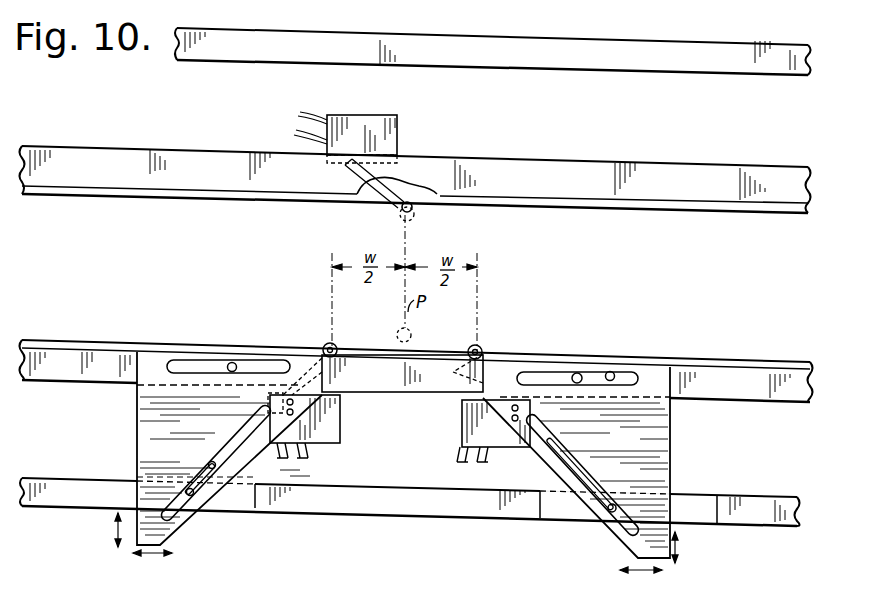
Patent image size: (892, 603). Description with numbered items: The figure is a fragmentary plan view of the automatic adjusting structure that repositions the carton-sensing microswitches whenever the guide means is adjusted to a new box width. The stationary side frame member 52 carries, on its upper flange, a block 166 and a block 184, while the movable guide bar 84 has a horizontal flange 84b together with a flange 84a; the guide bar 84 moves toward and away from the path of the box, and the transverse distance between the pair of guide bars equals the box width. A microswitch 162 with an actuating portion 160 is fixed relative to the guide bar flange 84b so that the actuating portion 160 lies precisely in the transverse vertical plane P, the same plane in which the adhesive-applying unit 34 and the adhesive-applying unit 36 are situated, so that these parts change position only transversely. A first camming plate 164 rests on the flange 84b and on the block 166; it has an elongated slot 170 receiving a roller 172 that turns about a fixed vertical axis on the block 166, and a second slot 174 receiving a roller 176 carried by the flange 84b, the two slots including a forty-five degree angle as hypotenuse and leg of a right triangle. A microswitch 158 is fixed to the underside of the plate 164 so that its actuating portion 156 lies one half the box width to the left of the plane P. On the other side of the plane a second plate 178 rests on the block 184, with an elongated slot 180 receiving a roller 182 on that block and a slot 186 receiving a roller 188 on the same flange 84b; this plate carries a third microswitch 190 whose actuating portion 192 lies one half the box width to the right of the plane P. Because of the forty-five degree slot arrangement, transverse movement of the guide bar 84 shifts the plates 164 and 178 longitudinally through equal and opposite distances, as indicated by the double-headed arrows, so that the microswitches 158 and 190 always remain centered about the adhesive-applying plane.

The side frame member 52 is at (534, 32).
The guide bar 84 is at (598, 160).
The lower flange of slide bar 84a is at (717, 212).
The flange of guide bar 84b is at (662, 172).
The microswitch 162 is at (397, 140).
The actuating portion 160 is at (422, 198).
The adhesive-applying unit 36 is at (397, 216).
The adhesive-applying unit 34 is at (397, 330).
The actuating portion 156 is at (324, 344).
The actuating portion 192 is at (480, 348).
The plate 164 is at (210, 441).
The second slot 174 is at (194, 362).
The roller 176 is at (234, 362).
The microswitch 158 is at (340, 426).
The third microswitch 190 is at (463, 434).
The second plate 178 is at (625, 448).
The elongated slot 186 is at (612, 372).
The roller 188 is at (580, 374).
The roller 172 is at (210, 507).
The elongated slot 170 is at (212, 462).
The elongated slot 180 is at (552, 442).
The roller 182 is at (606, 516).
The block 166 is at (244, 504).
The block 184 is at (569, 518).